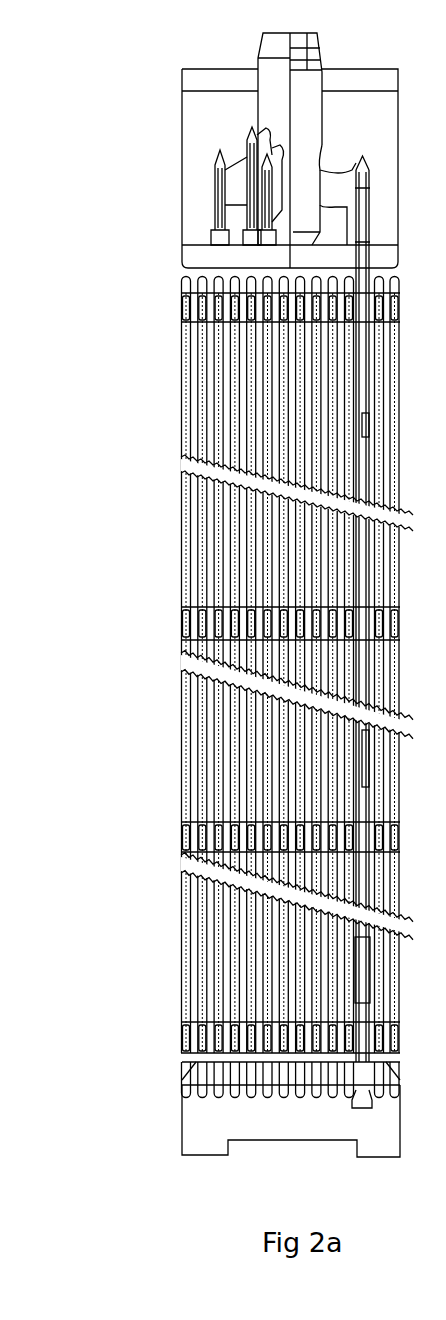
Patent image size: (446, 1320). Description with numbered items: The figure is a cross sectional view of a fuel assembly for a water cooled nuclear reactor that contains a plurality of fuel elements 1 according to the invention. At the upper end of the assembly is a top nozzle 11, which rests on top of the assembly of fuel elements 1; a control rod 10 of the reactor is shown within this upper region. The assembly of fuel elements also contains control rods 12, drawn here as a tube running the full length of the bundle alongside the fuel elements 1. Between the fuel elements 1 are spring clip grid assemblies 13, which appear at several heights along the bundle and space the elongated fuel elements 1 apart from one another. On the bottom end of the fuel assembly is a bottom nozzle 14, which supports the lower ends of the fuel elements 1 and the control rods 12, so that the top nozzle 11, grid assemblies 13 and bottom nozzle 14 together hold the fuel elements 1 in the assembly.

The fuel elements 1 is at (223, 595).
The control rod 10 is at (257, 108).
The top nozzle 11 is at (181, 226).
The control rods 12 is at (363, 378).
The spring clip grid assemblies 13 is at (181, 838).
The bottom nozzle 14 is at (181, 1123).